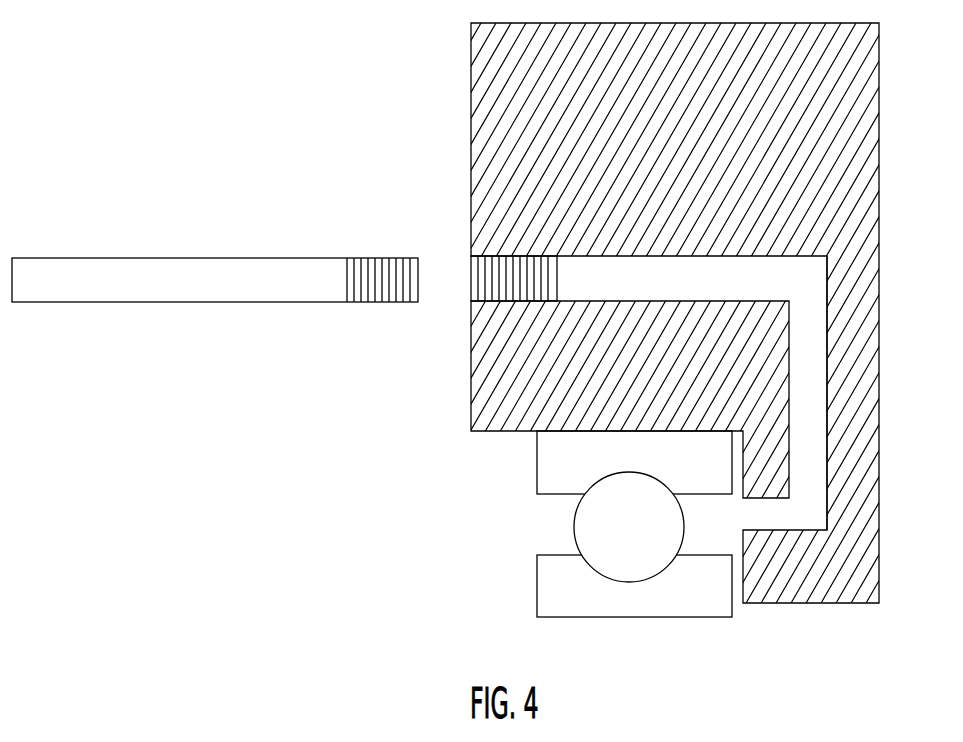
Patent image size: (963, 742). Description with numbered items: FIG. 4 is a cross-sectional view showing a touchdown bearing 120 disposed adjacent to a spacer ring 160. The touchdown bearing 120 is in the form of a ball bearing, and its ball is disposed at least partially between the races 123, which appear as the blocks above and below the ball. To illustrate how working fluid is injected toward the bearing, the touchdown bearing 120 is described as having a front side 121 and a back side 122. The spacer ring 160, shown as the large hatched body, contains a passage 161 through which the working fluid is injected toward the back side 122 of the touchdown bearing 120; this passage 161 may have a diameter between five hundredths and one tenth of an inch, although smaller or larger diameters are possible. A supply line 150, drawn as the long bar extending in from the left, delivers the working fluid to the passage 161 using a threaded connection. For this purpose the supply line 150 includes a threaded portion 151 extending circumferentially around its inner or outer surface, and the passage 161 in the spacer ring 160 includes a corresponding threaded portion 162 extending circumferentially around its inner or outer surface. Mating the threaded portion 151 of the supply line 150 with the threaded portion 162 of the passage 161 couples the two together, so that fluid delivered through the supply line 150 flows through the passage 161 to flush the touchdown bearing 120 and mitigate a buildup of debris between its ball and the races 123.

The touchdown bearing 120 is at (645, 538).
The front side 121 is at (578, 534).
The back side 122 is at (683, 525).
The races 123 is at (537, 577).
The supply line 150 is at (90, 282).
The threaded portion 151 is at (372, 270).
The spacer ring 160 is at (661, 185).
The passage 161 is at (808, 362).
The threaded portion 162 is at (507, 272).